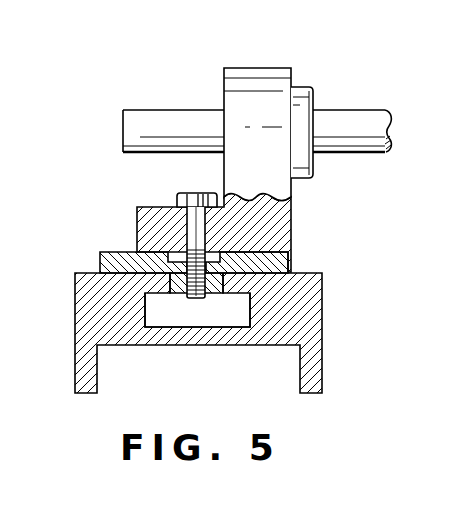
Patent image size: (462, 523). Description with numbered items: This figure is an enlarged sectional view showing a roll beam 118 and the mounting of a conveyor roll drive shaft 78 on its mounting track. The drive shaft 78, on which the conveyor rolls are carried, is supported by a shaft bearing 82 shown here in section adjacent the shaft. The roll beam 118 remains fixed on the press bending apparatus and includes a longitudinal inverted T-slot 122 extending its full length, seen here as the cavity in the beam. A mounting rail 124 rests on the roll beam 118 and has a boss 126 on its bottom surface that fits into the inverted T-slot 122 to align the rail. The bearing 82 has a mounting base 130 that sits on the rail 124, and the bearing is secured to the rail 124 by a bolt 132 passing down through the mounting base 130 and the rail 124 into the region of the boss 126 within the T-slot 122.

The drive shaft 78 is at (368, 122).
The shaft bearing 82 is at (242, 88).
The roll beam 118 is at (312, 312).
The inverted T-slot 122 is at (228, 305).
The mounting rail 124 is at (293, 258).
The boss 126 is at (180, 288).
The mounting base 130 is at (147, 222).
The bolt 132 is at (182, 193).